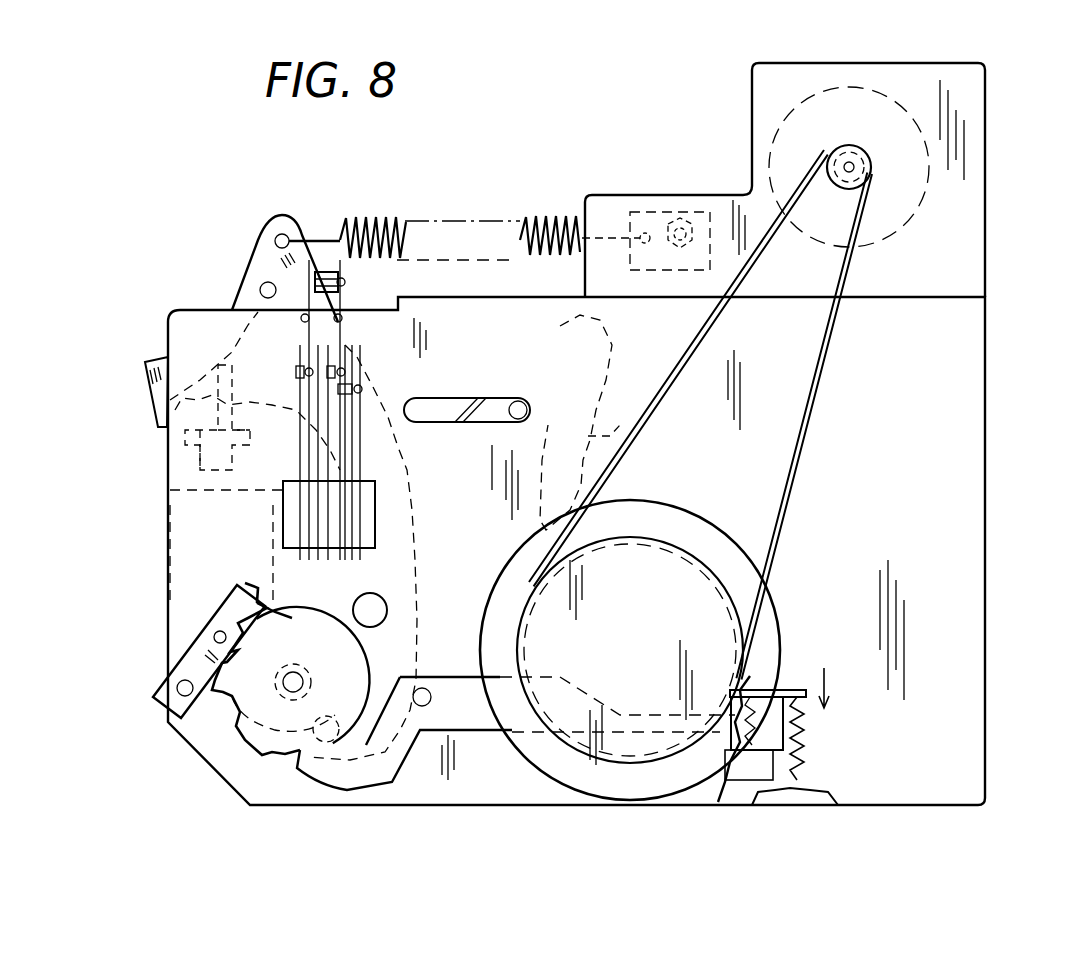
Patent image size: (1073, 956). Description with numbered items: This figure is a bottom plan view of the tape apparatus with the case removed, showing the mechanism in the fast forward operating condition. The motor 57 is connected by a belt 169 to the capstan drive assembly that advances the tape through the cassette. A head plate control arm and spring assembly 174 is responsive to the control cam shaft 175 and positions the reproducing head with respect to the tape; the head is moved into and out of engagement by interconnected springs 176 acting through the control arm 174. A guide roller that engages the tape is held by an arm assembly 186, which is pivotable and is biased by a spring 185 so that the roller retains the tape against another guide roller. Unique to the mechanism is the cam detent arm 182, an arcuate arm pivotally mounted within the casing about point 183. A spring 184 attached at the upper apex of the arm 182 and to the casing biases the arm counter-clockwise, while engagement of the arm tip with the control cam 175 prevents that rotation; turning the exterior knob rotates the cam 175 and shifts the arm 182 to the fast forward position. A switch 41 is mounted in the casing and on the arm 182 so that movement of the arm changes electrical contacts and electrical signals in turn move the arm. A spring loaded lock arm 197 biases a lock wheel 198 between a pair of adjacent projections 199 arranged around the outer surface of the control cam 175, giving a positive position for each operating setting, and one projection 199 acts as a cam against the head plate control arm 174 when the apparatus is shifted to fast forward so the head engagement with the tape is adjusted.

The motor 57 is at (882, 93).
The belt 169 is at (845, 268).
The spring 184 is at (384, 222).
The switch 41 is at (367, 443).
The spring 185 is at (560, 333).
The arm assembly 186 is at (604, 432).
The cam detent arm 182 is at (415, 550).
The pivot point 183 is at (395, 598).
The control cam shaft 175 is at (270, 710).
The spring loaded lock arm 197 is at (218, 652).
The lock wheel 198 is at (232, 640).
The projections 199 is at (268, 612).
The head plate control arm and spring assembly 174 is at (480, 720).
The springs 176 is at (756, 712).